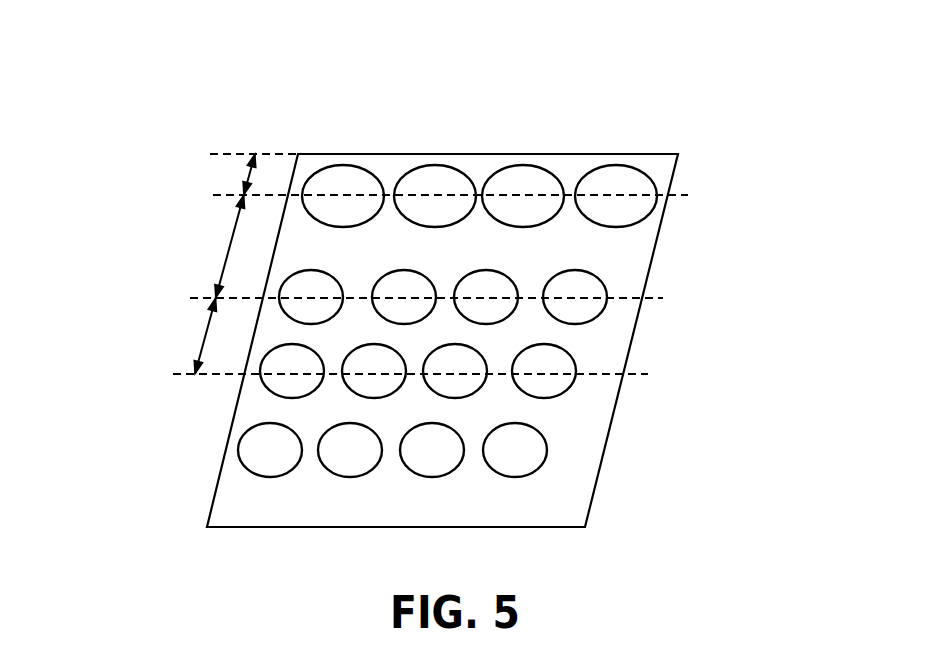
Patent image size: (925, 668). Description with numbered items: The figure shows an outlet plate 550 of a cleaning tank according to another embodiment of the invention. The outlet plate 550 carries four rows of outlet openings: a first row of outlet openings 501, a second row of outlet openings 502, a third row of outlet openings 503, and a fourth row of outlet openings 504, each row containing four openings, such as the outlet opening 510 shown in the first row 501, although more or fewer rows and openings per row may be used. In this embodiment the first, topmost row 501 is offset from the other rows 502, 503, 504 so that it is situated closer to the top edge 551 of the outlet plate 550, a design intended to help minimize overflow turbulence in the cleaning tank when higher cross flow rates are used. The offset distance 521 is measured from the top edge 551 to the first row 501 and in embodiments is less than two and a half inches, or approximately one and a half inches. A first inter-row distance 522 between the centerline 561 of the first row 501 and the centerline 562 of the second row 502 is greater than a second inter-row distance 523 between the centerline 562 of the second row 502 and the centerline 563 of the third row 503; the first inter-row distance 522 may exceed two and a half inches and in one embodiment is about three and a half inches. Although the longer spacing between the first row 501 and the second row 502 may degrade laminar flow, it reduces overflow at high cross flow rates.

The first row of outlet openings 501 is at (563, 131).
The second row of outlet openings 502 is at (697, 297).
The third row of outlet openings 503 is at (680, 371).
The fourth row of outlet openings 504 is at (658, 447).
The outlet opening 510 is at (310, 126).
The offset distance 521 is at (248, 173).
The first inter-row distance 522 is at (227, 255).
The second inter-row distance 523 is at (197, 348).
The outlet plate 550 is at (726, 133).
The top edge 551 is at (479, 148).
The centerline of the first row 561 is at (677, 197).
The centerline of the second row 562 is at (657, 298).
The centerline of the third row 563 is at (627, 375).